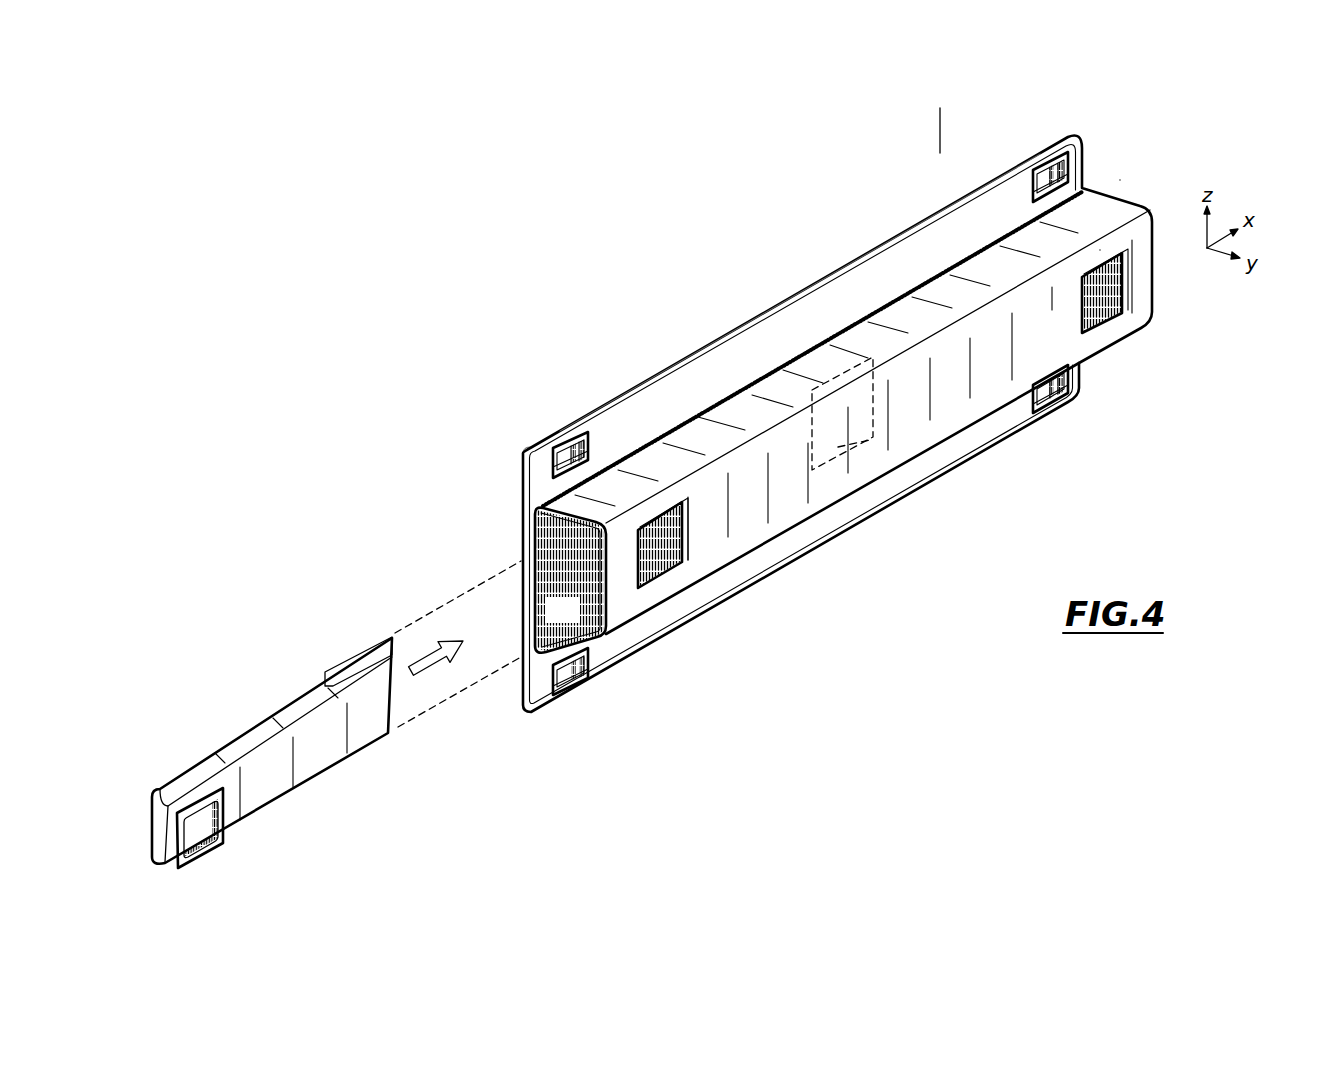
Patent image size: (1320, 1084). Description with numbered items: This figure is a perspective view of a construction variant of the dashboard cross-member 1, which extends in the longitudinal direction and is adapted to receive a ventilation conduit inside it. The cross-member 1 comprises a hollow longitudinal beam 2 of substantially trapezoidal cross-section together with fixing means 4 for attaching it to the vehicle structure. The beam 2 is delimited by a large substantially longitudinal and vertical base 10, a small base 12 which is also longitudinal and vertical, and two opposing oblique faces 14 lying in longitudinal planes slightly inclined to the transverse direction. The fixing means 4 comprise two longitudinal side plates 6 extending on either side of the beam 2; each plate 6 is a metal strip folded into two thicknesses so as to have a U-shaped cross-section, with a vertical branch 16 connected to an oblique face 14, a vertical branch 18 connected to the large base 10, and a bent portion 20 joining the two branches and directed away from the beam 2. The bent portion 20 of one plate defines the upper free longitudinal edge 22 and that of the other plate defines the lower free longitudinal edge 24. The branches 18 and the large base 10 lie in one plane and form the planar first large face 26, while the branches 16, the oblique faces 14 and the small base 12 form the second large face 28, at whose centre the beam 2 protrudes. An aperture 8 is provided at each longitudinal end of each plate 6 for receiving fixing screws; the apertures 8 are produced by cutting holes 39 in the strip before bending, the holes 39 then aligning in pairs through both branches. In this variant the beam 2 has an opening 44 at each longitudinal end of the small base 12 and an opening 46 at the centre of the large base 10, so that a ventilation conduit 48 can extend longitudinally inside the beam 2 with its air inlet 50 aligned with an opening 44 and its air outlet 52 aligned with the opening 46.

The cross-member 1 is at (941, 122).
The longitudinal beam 2 is at (1168, 288).
The fixing means 4 is at (1123, 177).
The longitudinal side plate 6 is at (983, 210).
The aperture 8 is at (1052, 172).
The large base 10 is at (538, 597).
The small base 12 is at (598, 592).
The oblique face 14 is at (545, 513).
The vertical branch 16 is at (552, 473).
The vertical branch 18 is at (522, 470).
The bent portion 20 is at (528, 447).
The upper free longitudinal edge 22 is at (880, 244).
The lower longitudinal free edge 24 is at (716, 614).
The first large face 26 is at (515, 546).
The second large face 28 is at (1110, 363).
The hole 39 is at (588, 452).
The opening 44 is at (686, 543).
The opening 46 is at (876, 413).
The ventilation conduit 48 is at (326, 786).
The air inlet 50 is at (198, 835).
The air outlet 52 is at (342, 658).